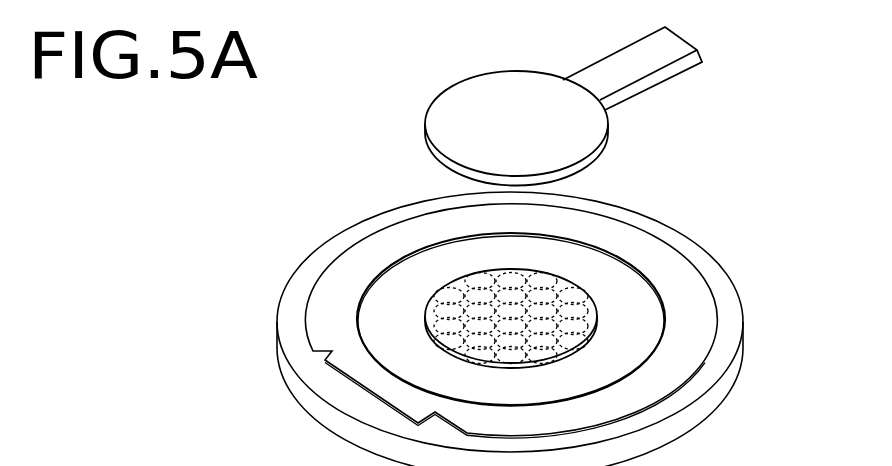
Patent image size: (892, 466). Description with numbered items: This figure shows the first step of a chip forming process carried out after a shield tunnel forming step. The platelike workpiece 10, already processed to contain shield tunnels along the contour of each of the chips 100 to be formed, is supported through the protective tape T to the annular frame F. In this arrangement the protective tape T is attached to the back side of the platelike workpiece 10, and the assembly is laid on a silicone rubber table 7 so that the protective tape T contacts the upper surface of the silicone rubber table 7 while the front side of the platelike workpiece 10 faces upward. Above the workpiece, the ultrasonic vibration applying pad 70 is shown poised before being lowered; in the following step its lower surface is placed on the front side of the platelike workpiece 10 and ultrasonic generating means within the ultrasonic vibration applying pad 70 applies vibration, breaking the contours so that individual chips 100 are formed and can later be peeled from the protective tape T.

The ultrasonic vibration applying pad 70 is at (613, 135).
The silicone rubber table 7 is at (744, 358).
The annular frame F is at (685, 288).
The protective tape T is at (615, 267).
The platelike workpiece 10 is at (598, 315).
The chips 100 is at (427, 317).